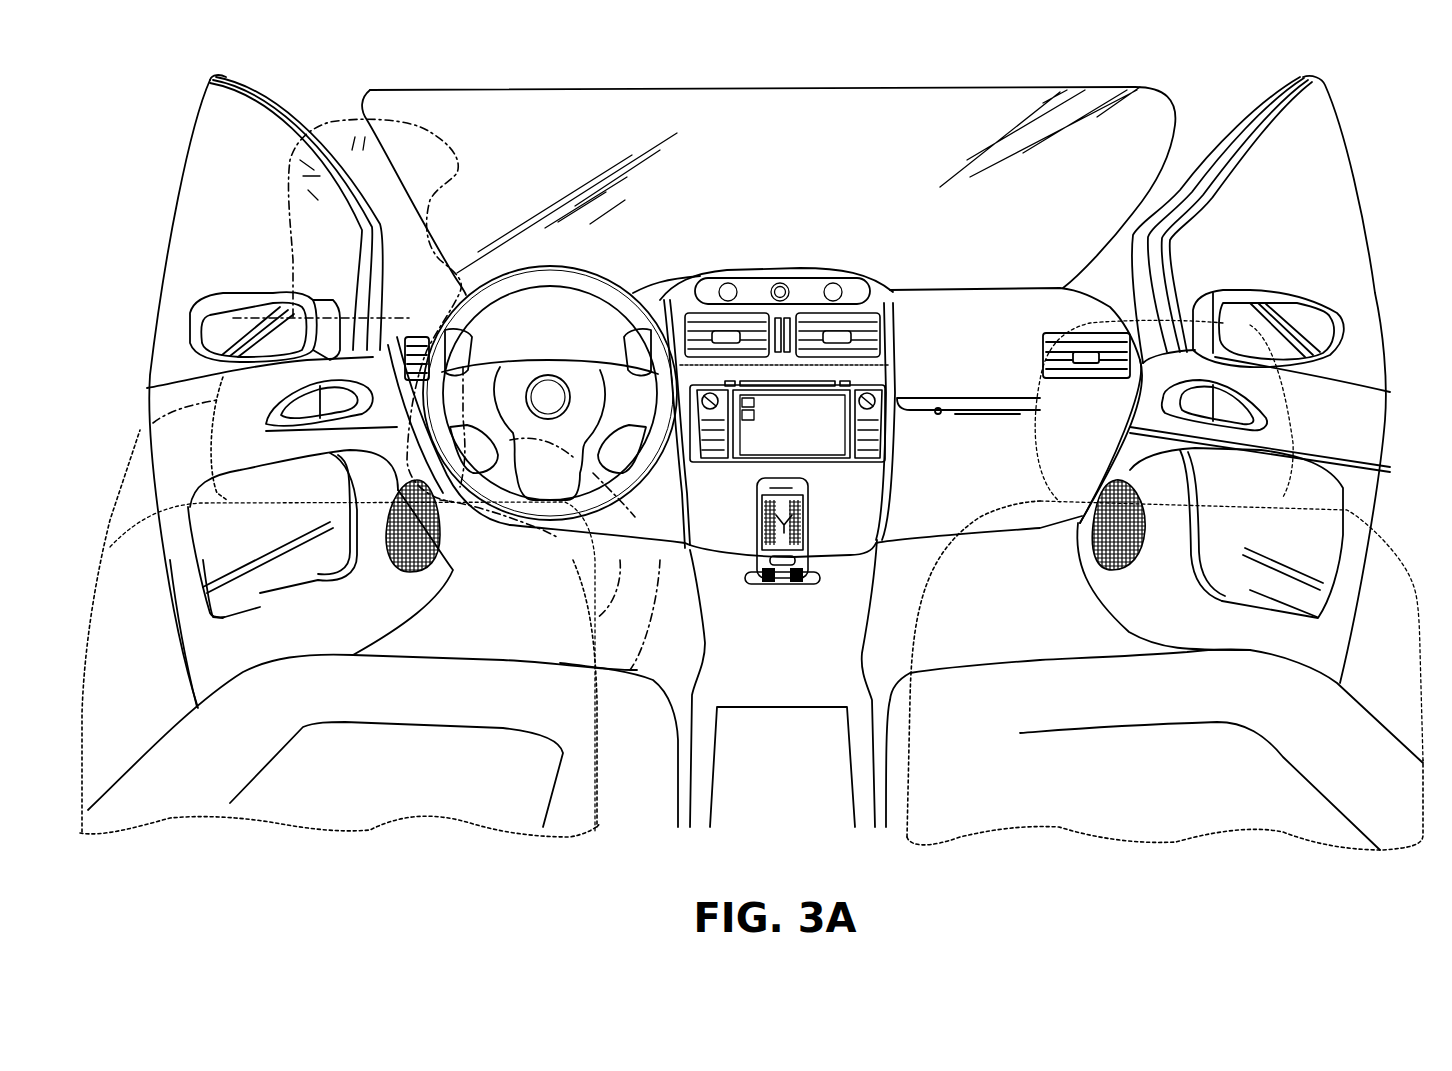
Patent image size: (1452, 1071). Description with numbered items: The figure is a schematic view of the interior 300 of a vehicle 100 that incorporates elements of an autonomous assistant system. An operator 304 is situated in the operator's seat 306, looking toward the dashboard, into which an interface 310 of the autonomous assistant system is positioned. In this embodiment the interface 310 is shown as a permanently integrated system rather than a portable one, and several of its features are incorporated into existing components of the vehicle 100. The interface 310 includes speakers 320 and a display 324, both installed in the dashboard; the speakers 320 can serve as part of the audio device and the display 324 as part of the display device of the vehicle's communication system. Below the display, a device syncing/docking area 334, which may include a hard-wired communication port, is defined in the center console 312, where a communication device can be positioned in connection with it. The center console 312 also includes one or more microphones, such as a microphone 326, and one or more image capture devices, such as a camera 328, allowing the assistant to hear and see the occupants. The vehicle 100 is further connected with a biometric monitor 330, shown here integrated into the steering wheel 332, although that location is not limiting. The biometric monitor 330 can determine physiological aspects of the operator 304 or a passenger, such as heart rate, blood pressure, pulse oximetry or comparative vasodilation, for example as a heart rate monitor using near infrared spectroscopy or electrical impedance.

The vehicle 100 is at (1185, 135).
The interior 300 is at (1005, 113).
The operator 304 is at (457, 157).
The operator's seat 306 is at (660, 773).
The interface 310 is at (822, 387).
The center console 312 is at (873, 300).
The speakers 320 is at (757, 527).
The display 324 is at (771, 435).
The microphone 326 is at (724, 282).
The camera 328 is at (779, 282).
The biometric monitor 330 is at (473, 317).
The steering wheel 332 is at (630, 300).
The device syncing/docking area 334 is at (810, 568).